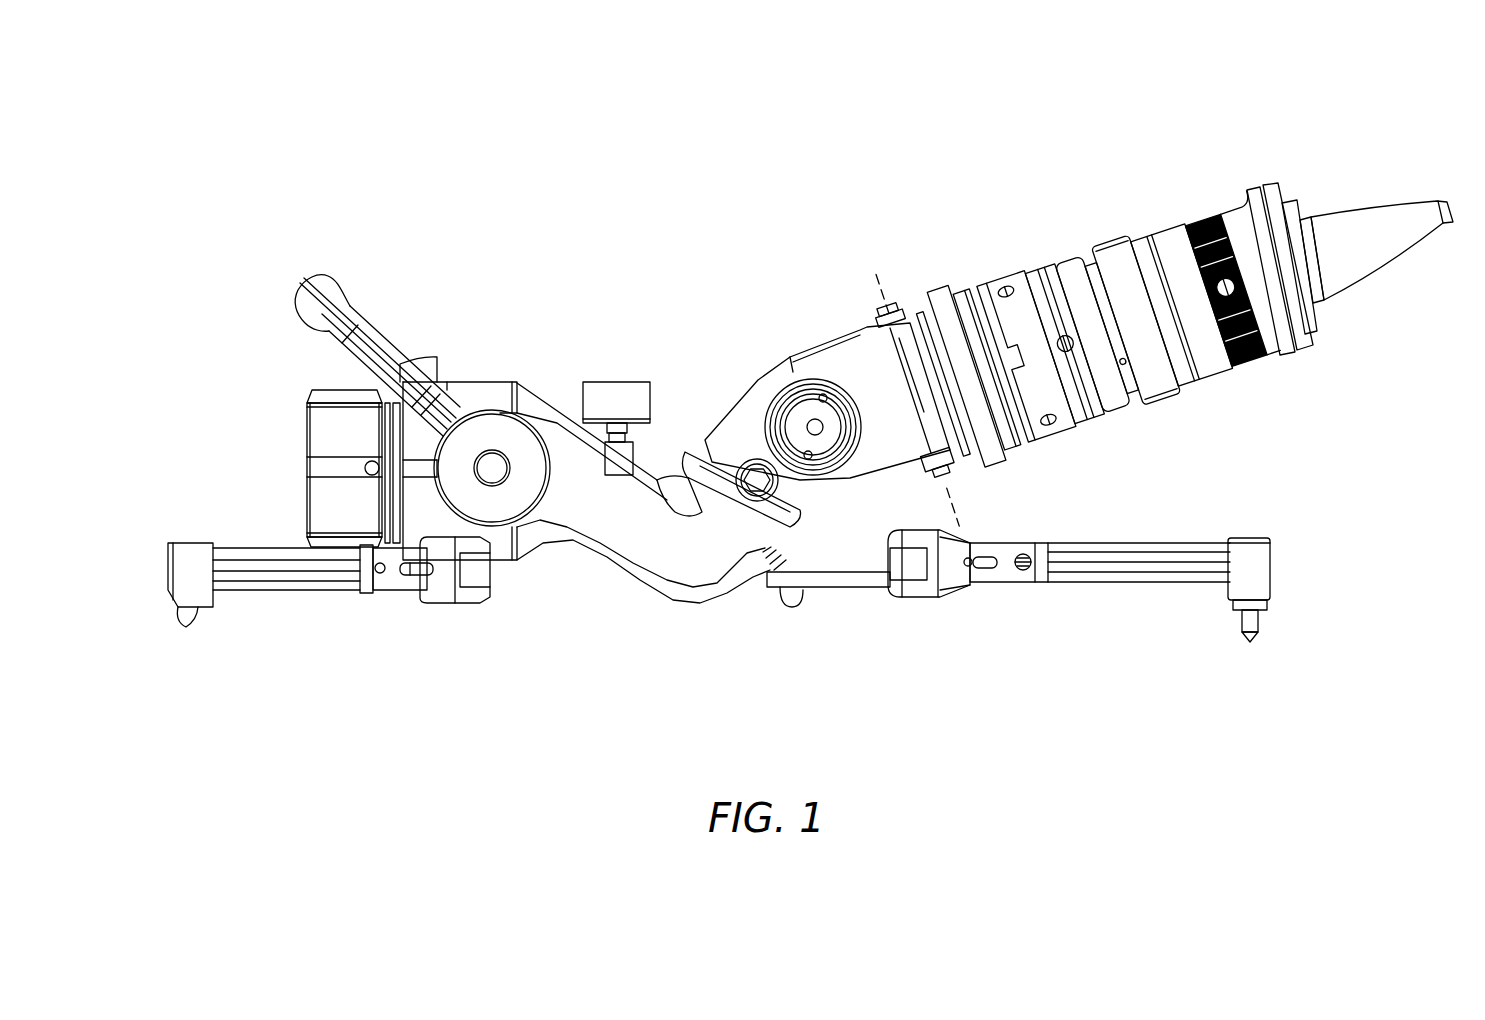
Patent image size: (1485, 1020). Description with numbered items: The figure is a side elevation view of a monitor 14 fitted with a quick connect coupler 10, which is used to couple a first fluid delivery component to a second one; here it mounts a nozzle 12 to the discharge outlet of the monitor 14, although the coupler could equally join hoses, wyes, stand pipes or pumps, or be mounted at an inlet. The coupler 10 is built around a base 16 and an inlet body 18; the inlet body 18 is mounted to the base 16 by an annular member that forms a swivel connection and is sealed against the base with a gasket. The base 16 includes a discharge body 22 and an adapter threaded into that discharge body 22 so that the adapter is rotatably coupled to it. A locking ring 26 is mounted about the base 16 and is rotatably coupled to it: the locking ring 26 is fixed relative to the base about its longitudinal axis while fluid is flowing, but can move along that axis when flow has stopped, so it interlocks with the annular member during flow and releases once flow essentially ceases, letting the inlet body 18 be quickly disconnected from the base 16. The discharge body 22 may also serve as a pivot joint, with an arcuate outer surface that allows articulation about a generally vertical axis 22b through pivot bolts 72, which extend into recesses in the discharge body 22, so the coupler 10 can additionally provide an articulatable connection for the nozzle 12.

The quick connect coupler 10 is at (1050, 210).
The nozzle 12 is at (1310, 175).
The monitor 14 is at (661, 323).
The base 16 is at (920, 300).
The inlet body 18 is at (1107, 423).
The discharge body 22 is at (968, 466).
The generally vertical axis 22b is at (878, 265).
The locking ring 26 is at (963, 277).
The pivot bolts 72 is at (840, 307).